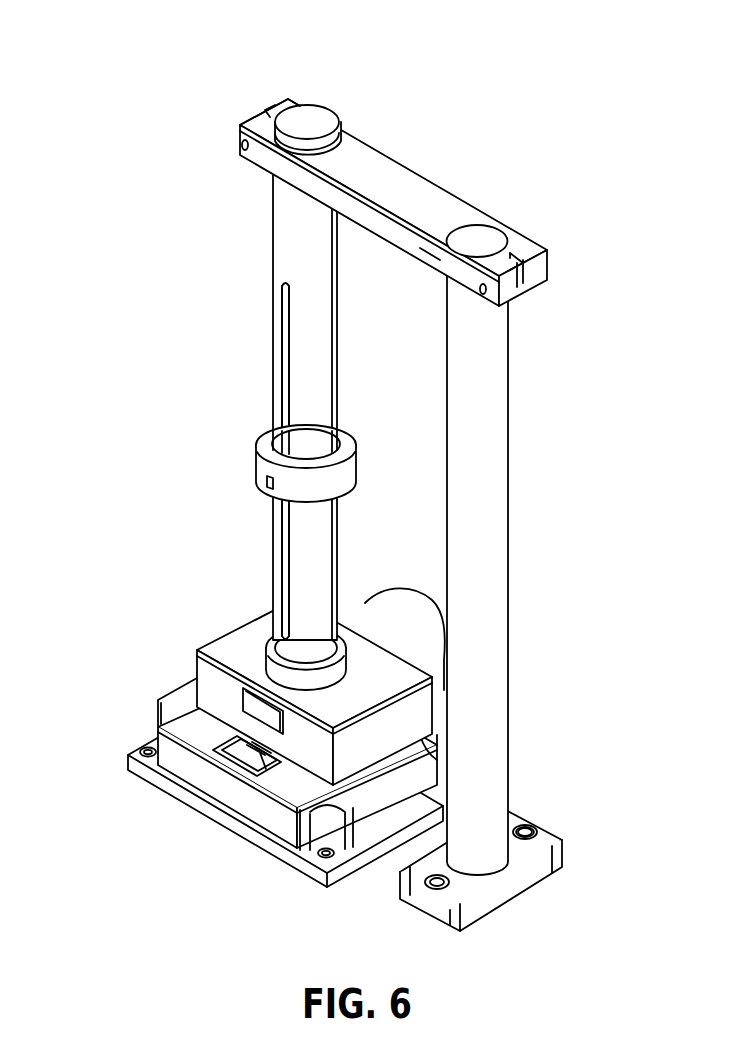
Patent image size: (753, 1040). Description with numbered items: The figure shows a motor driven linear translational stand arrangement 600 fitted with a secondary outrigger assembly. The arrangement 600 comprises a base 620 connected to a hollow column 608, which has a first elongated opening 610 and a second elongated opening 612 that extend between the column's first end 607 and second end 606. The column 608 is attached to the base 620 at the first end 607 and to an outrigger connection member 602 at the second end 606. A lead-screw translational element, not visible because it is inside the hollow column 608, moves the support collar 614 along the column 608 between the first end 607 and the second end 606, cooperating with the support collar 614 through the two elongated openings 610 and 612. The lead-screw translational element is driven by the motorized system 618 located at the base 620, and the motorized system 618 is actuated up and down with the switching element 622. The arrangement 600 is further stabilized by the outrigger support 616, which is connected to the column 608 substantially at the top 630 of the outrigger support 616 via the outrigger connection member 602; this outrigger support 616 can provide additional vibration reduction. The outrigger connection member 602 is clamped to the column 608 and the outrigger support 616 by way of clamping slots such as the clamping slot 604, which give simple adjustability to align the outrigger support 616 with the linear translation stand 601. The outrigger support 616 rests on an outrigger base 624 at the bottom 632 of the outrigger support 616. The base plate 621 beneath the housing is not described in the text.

The motor driven linear translational stand arrangement 600 is at (678, 66).
The linear translation stand 601 is at (350, 118).
The outrigger connection member 602 is at (447, 187).
The clamping slot 604 is at (457, 211).
The second end 606 is at (250, 108).
The first end 607 is at (258, 620).
The hollow column 608 is at (215, 340).
The first elongated opening 610 is at (291, 305).
The second elongated opening 612 is at (328, 407).
The support collar 614 is at (258, 467).
The outrigger support 616 is at (510, 458).
The motorized system 618 is at (347, 607).
The base 620 is at (230, 696).
The base plate 621 is at (285, 787).
The switching element 622 is at (222, 728).
The outrigger base 624 is at (575, 845).
The top of the outrigger support 630 is at (433, 255).
The bottom of the outrigger support 632 is at (553, 815).